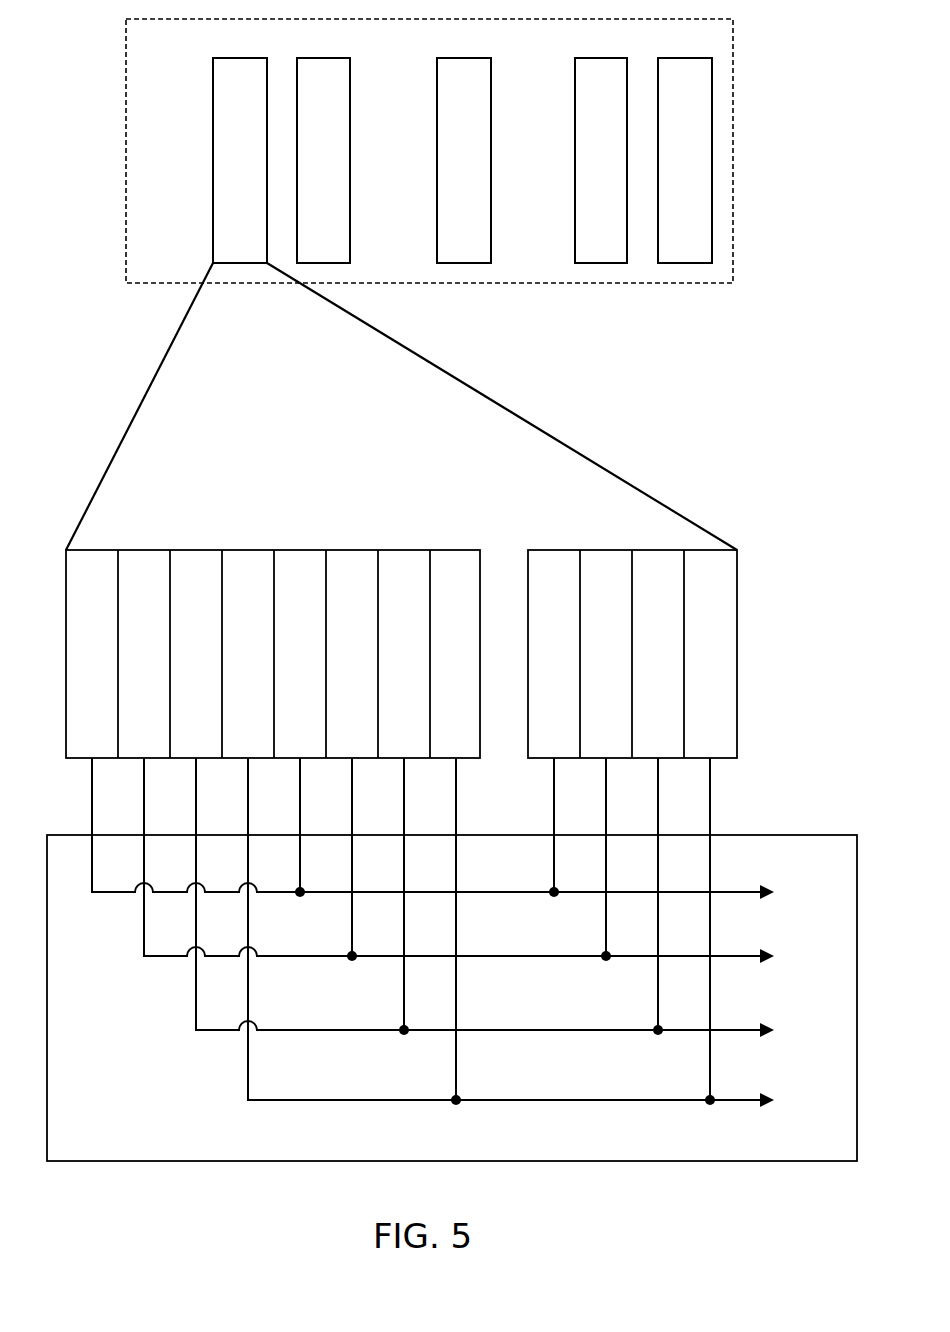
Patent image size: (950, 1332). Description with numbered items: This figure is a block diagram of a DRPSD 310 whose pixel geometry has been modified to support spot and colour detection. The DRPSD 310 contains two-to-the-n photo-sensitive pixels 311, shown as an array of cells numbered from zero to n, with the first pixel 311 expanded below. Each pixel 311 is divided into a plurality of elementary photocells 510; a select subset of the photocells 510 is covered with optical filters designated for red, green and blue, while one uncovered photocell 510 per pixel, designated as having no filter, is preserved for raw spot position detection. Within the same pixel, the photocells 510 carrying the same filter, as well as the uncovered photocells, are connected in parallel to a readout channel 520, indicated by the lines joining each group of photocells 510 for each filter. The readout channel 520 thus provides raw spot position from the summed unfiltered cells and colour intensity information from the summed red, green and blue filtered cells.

The DRPSD 310 is at (178, 49).
The photo-sensitive pixel 311 is at (200, 142).
The elementary photocell 510 is at (462, 492).
The readout channel 520 is at (617, 1161).